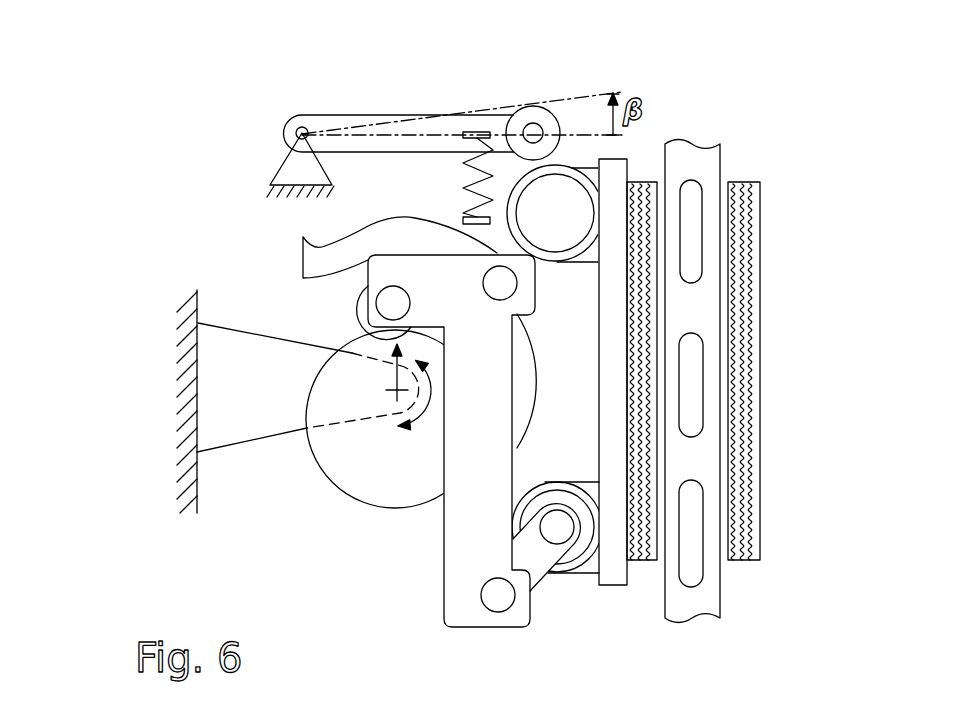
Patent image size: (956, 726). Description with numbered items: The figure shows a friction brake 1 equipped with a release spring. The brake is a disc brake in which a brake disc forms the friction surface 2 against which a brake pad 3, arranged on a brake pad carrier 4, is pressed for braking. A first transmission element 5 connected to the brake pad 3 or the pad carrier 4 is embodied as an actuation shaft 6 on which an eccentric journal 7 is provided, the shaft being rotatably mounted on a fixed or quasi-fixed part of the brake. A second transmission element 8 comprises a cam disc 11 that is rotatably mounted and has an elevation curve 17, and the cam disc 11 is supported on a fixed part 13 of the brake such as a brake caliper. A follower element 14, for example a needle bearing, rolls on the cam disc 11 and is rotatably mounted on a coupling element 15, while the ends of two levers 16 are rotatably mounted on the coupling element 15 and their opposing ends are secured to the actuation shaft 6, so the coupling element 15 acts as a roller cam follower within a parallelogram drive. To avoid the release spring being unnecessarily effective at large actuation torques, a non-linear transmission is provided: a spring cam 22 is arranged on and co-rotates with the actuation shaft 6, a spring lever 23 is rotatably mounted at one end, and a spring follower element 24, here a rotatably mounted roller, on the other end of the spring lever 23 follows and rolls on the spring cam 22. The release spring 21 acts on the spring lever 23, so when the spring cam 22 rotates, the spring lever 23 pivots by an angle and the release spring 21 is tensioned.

The friction brake 1 is at (232, 208).
The friction surface 2 is at (698, 163).
The brake pad 3 is at (757, 498).
The brake pad carrier 4 is at (612, 560).
The first transmission element 5 is at (584, 587).
The actuation shaft 6 is at (568, 502).
The eccentric journal 7 is at (557, 462).
The second transmission element 8 is at (299, 466).
The cam disc 11 is at (360, 463).
The fixed part 13 is at (197, 413).
The follower element 14 is at (357, 310).
The coupling element 15 is at (497, 540).
The lever 16 is at (535, 558).
The elevation curve 17 is at (405, 405).
The release spring 21 is at (463, 205).
The spring cam 22 is at (600, 166).
The spring lever 23 is at (327, 125).
The spring follower element 24 is at (537, 112).